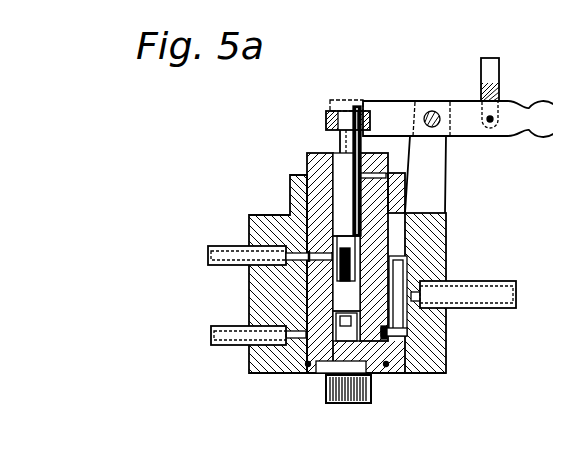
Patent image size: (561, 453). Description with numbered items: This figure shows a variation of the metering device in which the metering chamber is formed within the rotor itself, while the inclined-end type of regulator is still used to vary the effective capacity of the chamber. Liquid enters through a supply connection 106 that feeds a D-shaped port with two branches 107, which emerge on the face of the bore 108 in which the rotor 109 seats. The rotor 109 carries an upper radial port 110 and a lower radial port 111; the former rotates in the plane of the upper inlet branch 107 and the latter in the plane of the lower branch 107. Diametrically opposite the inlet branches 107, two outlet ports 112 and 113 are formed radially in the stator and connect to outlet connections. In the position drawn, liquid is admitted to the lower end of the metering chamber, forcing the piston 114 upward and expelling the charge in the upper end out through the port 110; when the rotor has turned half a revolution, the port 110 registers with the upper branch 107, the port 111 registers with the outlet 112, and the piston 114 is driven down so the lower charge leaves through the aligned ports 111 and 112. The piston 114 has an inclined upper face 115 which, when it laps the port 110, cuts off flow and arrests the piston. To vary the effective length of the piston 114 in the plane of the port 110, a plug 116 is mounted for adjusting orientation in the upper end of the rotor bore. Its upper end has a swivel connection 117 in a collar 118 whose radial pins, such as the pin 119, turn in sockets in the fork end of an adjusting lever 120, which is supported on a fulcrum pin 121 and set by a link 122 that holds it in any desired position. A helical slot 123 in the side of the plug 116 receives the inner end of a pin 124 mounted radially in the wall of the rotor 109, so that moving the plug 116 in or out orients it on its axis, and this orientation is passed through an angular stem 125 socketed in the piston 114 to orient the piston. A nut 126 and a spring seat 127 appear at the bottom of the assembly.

The supply connection 106 is at (498, 288).
The inlet branches 107 is at (400, 249).
The bore 108 is at (260, 272).
The rotor 109 is at (305, 358).
The upper radial port 110 is at (293, 198).
The lower radial port 111 is at (405, 318).
The outlet port 112 is at (287, 331).
The outlet port 113 is at (262, 206).
The piston 114 is at (362, 360).
The inclined upper face 115 is at (334, 230).
The plug 116 is at (354, 126).
The swivel connection 117 is at (319, 108).
The collar 118 is at (352, 100).
The pin 119 is at (334, 94).
The adjusting lever 120 is at (398, 98).
The fulcrum pin 121 is at (430, 104).
The link 122 is at (492, 62).
The helical slot 123 is at (324, 152).
The pin 124 is at (372, 168).
The angular stem 125 is at (348, 229).
The retaining nut 126 is at (342, 396).
The spring seat 127 is at (390, 365).